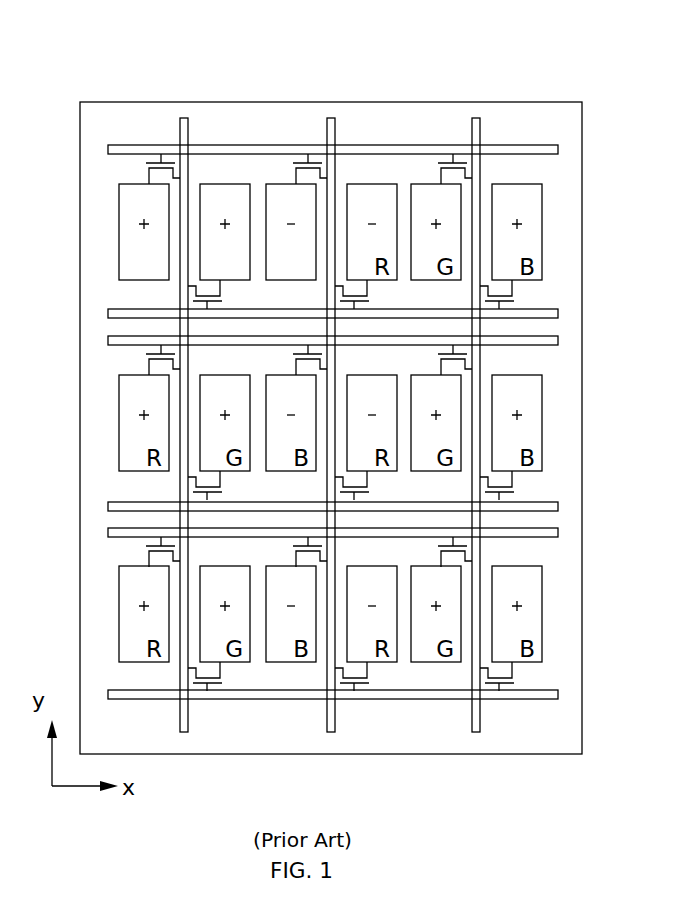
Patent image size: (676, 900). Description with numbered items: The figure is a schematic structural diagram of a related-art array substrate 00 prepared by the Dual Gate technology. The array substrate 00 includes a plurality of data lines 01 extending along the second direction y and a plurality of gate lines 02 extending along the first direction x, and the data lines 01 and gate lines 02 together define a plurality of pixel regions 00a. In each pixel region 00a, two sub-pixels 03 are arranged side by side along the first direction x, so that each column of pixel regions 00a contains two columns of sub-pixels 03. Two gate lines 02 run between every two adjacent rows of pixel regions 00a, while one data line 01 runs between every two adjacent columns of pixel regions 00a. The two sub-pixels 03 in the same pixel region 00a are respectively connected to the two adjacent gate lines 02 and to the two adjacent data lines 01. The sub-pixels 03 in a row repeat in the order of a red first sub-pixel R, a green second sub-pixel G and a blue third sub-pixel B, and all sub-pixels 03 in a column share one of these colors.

The array substrate 00 is at (71, 36).
The data line 01 is at (184, 120).
The gate line 02 is at (228, 137).
The sub-pixel 03 is at (135, 184).
The pixel region 00a is at (258, 170).